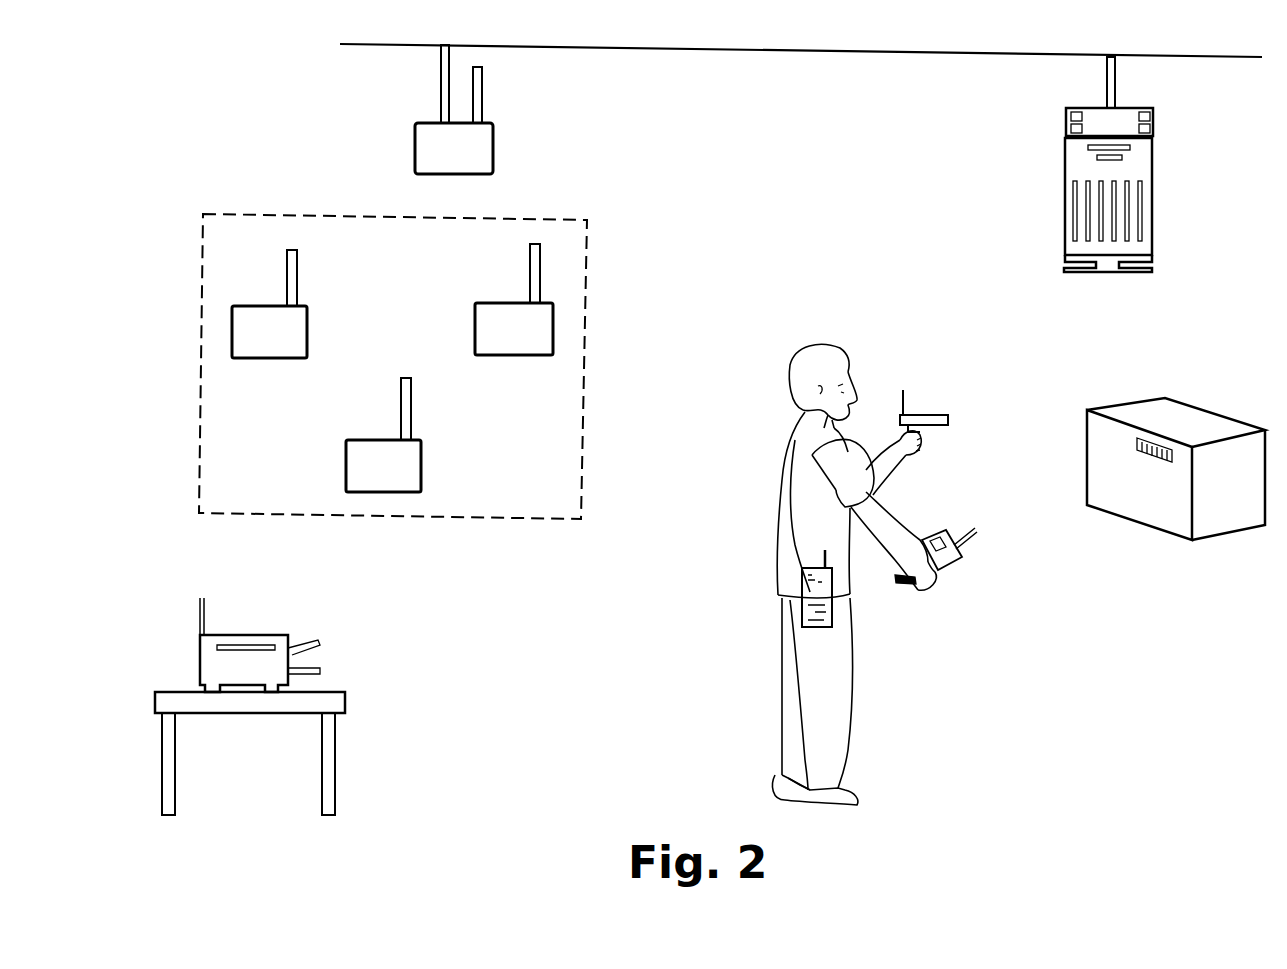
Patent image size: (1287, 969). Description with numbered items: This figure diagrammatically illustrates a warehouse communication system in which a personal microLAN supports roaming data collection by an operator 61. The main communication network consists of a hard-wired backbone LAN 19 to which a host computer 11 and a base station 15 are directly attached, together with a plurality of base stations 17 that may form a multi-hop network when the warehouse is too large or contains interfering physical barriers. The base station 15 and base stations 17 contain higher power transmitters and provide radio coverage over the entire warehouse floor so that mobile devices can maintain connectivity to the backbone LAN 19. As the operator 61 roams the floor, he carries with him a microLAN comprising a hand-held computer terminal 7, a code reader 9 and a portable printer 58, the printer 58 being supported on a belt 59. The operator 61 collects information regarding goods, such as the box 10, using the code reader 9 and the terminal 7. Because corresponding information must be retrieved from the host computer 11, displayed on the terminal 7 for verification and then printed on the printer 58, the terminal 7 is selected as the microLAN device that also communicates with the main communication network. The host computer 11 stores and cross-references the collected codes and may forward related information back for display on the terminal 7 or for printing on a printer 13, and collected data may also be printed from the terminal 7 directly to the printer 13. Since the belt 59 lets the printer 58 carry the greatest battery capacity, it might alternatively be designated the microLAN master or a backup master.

The computer terminal 7 is at (925, 540).
The code reader 9 is at (917, 415).
The box 10 is at (1137, 412).
The host computer 11 is at (1154, 163).
The printer 13 is at (249, 634).
The base station 15 is at (493, 150).
The base stations 17 is at (587, 293).
The backbone LAN 19 is at (913, 53).
The portable printer 58 is at (835, 613).
The belt 59 is at (780, 478).
The operator 61 is at (835, 345).